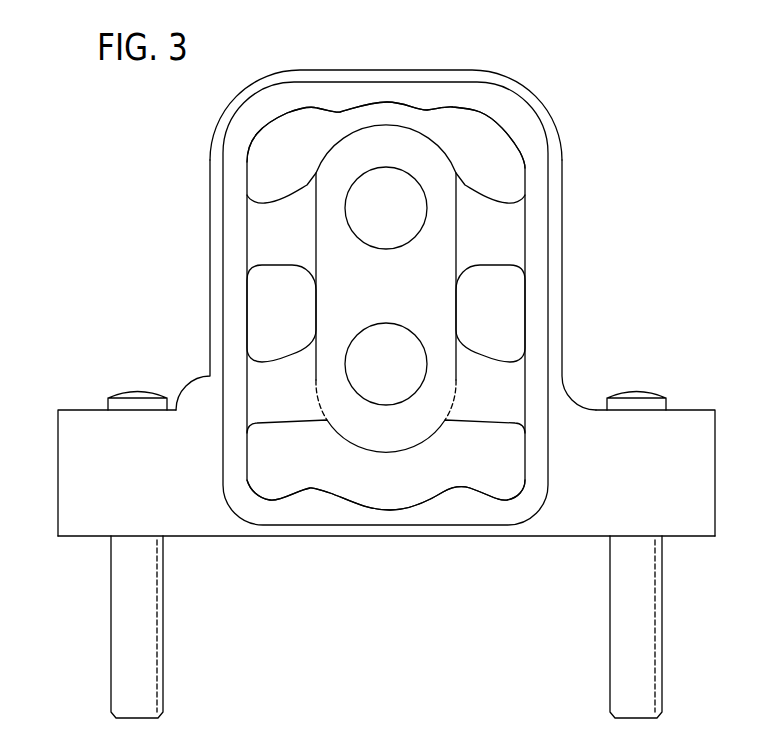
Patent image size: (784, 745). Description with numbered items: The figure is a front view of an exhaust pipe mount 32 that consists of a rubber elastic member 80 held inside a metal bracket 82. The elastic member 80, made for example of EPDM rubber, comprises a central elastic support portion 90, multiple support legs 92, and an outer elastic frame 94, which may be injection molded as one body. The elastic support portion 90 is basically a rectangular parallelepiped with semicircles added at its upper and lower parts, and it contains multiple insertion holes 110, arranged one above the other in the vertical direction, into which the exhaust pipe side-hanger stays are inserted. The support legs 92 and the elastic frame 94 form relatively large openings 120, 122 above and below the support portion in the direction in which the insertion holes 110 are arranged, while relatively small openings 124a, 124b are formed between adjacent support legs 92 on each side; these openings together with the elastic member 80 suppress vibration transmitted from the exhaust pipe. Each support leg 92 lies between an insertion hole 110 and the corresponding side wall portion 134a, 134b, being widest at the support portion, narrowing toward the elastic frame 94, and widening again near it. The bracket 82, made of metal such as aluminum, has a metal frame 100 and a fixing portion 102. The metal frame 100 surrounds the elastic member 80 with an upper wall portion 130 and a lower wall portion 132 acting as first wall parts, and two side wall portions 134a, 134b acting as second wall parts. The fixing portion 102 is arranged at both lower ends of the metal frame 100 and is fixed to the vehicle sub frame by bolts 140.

The exhaust pipe mount 32 is at (617, 68).
The elastic member 80 is at (613, 112).
The bracket 82 is at (61, 308).
The elastic support portion 90 is at (430, 160).
The support legs 92 is at (267, 232).
The elastic frame 94 is at (520, 120).
The metal frame 100 is at (210, 328).
The fixing portion 102 is at (83, 408).
The insertion holes 110 is at (410, 172).
The opening 120 is at (282, 150).
The opening 122 is at (373, 488).
The opening 124a is at (268, 294).
The opening 124b is at (492, 294).
The upper wall portion 130 is at (392, 68).
The lower wall portion 132 is at (437, 537).
The side wall portion 134a is at (207, 273).
The side wall portion 134b is at (565, 273).
The bolts 140 is at (137, 394).